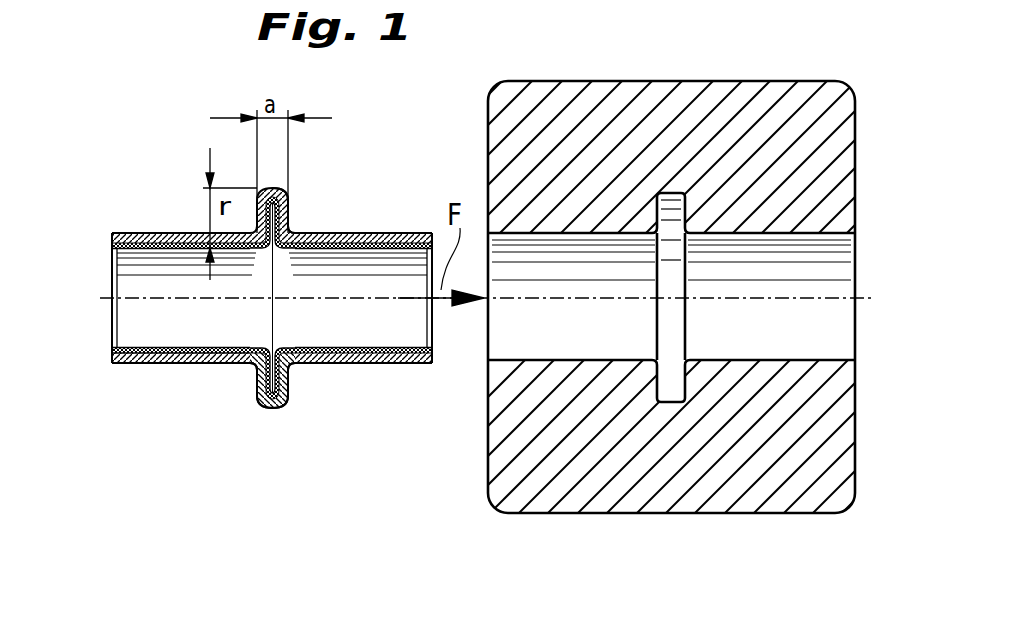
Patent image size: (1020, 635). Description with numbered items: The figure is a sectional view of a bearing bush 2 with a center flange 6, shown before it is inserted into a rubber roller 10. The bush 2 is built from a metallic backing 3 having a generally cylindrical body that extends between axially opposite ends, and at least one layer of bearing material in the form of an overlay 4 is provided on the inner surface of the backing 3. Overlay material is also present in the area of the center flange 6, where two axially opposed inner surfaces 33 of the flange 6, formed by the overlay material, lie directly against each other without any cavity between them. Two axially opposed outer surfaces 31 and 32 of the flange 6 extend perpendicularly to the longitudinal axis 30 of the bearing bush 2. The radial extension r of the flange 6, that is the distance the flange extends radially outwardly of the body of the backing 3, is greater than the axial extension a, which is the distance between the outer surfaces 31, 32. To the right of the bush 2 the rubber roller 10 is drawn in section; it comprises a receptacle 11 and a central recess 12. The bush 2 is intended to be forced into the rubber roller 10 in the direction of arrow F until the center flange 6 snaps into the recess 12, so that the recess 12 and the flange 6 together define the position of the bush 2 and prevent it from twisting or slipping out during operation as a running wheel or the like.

The bearing bush 2 is at (128, 229).
The metallic backing 3 is at (150, 363).
The overlay 4 is at (137, 345).
The center flange 6 is at (282, 412).
The rubber roller 10 is at (588, 488).
The receptacle 11 is at (807, 357).
The central recess 12 is at (670, 388).
The longitudinal axis 30 is at (166, 297).
The outer surface of the flange 31 is at (252, 382).
The outer surface of the flange 32 is at (293, 377).
The inner surfaces of the flange 33 is at (290, 215).